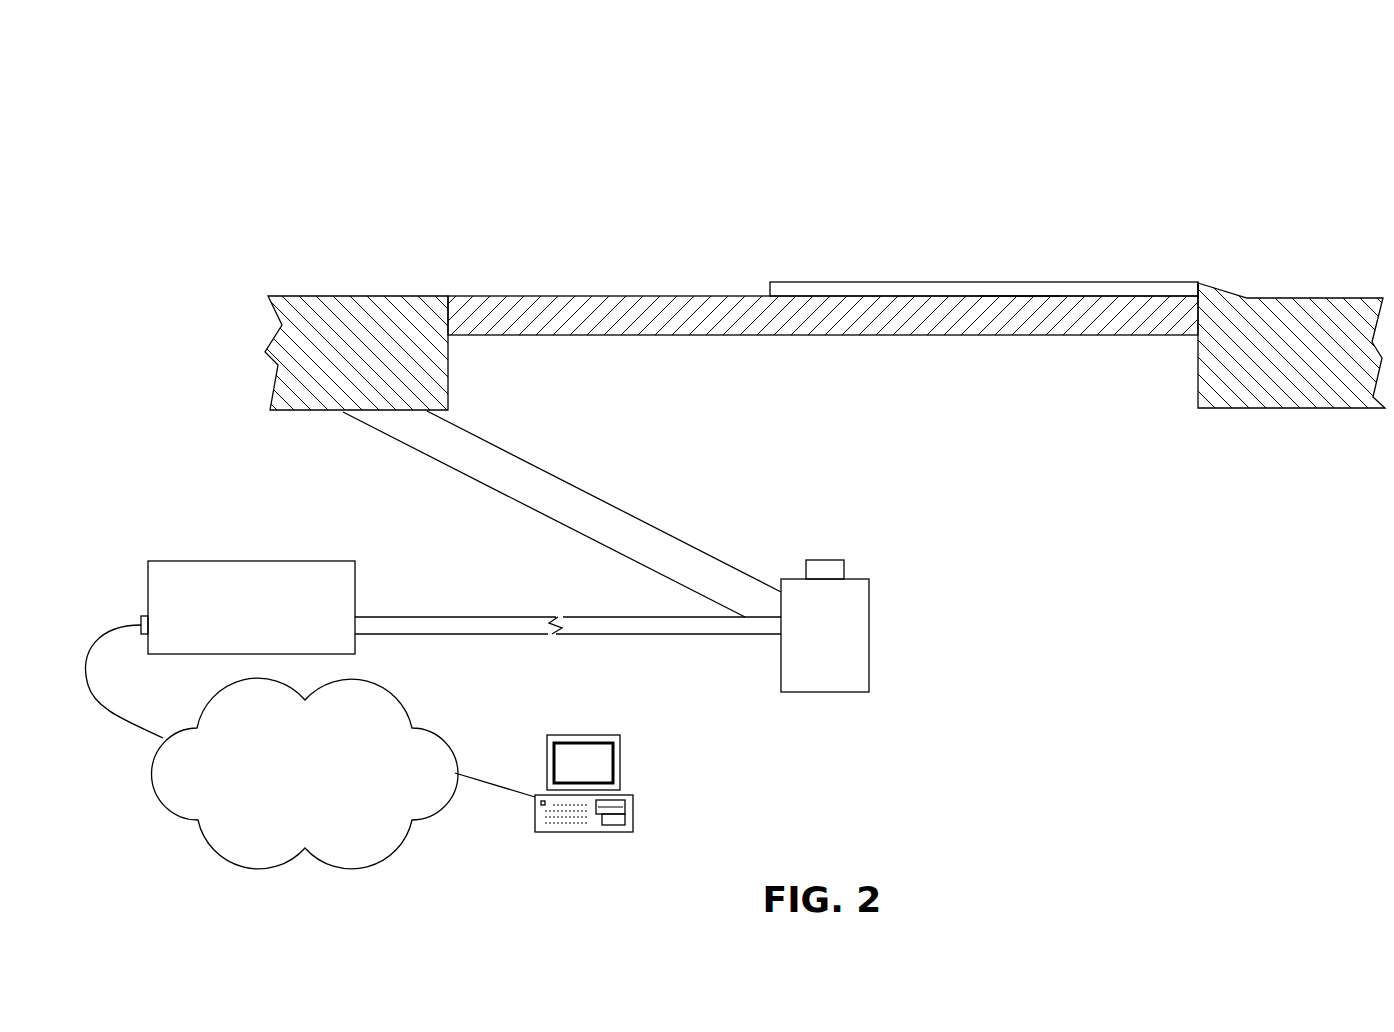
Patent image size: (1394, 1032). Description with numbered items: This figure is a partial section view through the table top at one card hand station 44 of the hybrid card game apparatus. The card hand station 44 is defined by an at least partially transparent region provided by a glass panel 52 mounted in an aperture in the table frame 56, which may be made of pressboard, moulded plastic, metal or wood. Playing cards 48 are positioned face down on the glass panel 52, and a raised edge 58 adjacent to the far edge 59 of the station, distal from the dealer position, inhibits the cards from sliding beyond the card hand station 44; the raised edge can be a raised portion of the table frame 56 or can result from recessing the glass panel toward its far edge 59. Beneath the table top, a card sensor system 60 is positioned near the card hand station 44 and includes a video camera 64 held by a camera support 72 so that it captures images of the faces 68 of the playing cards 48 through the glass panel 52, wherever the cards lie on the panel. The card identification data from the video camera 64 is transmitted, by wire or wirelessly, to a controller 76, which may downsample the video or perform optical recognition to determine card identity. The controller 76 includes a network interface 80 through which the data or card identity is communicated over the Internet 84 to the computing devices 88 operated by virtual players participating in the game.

The card hand station 44 is at (926, 131).
The playing cards 48 is at (922, 282).
The glass panel 52 is at (645, 313).
The table frame 56 is at (1306, 298).
The raised edge 58 is at (1186, 281).
The far edge 59 is at (1199, 252).
The card sensor system 60 is at (944, 591).
The video camera 64 is at (869, 657).
The faces 68 is at (1018, 310).
The camera support 72 is at (460, 470).
The controller 76 is at (193, 561).
The network interface 80 is at (146, 614).
The Internet 84 is at (305, 773).
The computing devices 88 is at (620, 752).